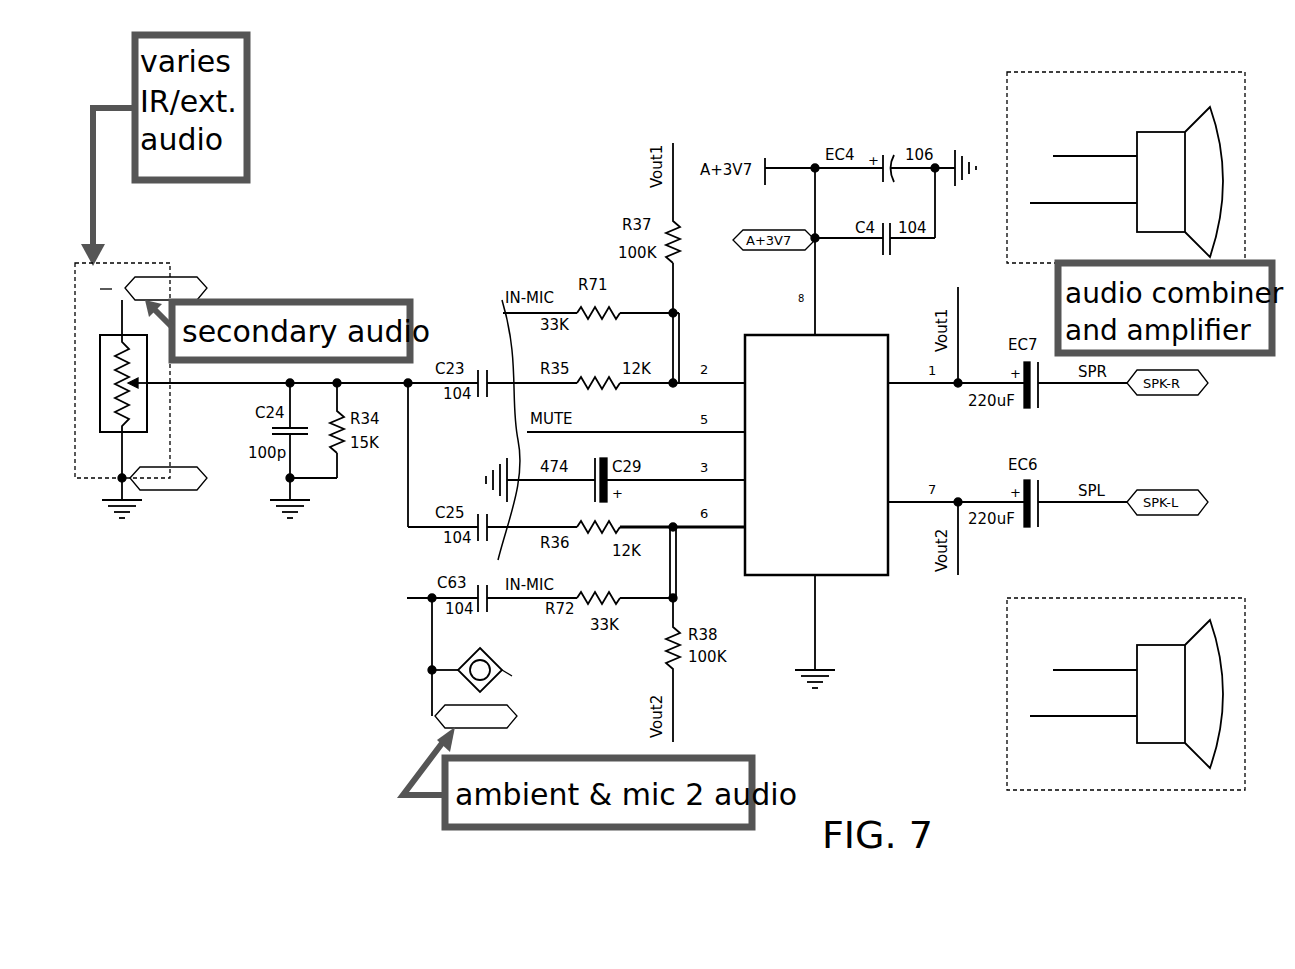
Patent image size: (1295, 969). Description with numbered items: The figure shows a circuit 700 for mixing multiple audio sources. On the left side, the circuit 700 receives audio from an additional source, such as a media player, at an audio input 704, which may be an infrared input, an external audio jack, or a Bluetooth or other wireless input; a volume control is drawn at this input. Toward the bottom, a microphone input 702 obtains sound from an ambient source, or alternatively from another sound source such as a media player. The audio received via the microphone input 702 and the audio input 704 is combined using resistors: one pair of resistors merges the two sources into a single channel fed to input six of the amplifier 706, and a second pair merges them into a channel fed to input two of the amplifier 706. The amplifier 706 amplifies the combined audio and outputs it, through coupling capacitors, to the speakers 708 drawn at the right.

The circuit 700 is at (450, 110).
The microphone input 702 is at (425, 712).
The audio input 704 is at (152, 265).
The amplifier 706 is at (832, 335).
The speakers 708 is at (1125, 72).